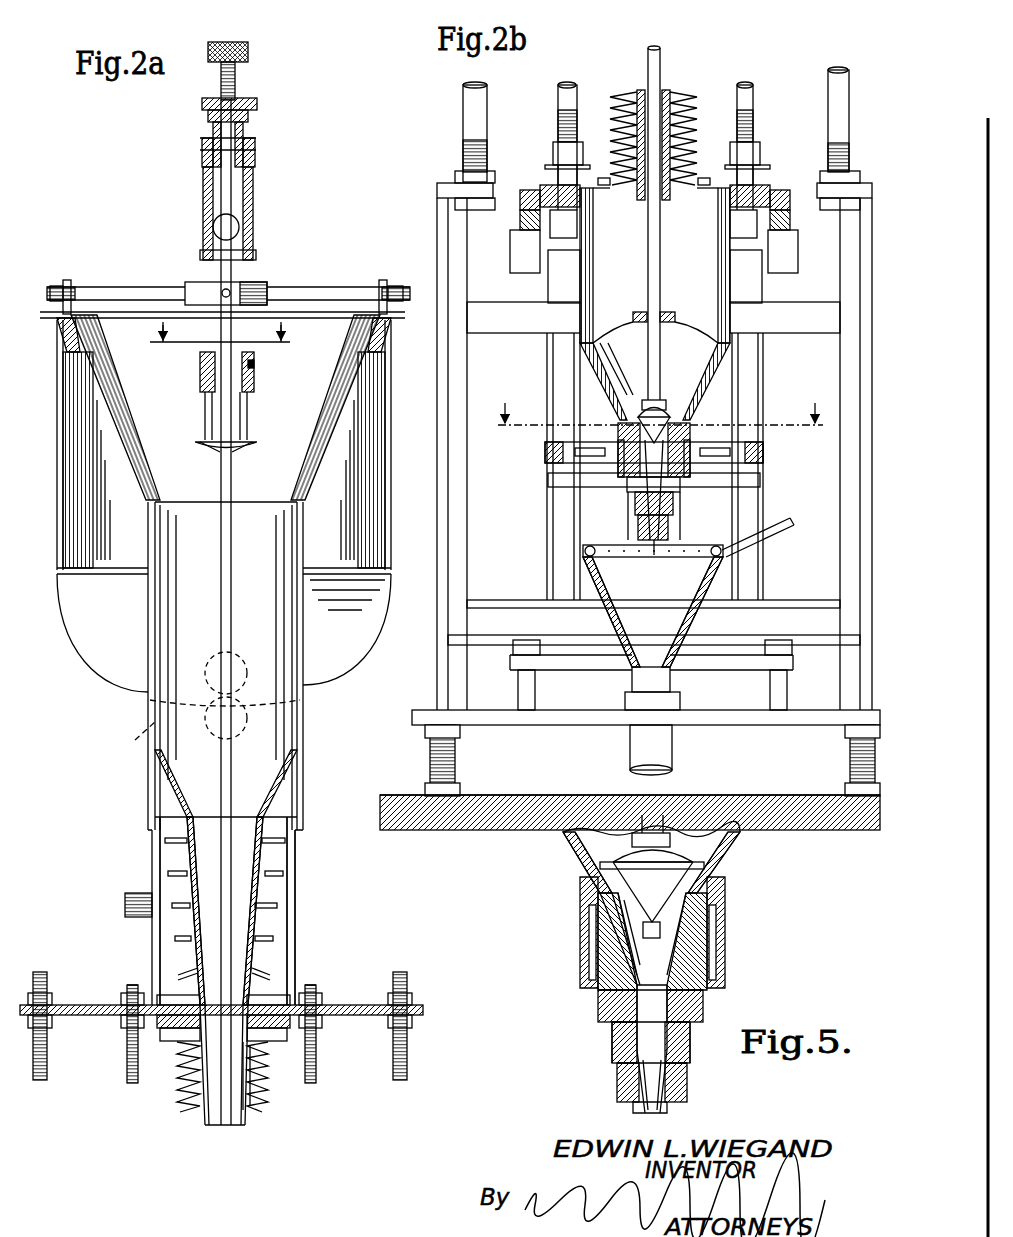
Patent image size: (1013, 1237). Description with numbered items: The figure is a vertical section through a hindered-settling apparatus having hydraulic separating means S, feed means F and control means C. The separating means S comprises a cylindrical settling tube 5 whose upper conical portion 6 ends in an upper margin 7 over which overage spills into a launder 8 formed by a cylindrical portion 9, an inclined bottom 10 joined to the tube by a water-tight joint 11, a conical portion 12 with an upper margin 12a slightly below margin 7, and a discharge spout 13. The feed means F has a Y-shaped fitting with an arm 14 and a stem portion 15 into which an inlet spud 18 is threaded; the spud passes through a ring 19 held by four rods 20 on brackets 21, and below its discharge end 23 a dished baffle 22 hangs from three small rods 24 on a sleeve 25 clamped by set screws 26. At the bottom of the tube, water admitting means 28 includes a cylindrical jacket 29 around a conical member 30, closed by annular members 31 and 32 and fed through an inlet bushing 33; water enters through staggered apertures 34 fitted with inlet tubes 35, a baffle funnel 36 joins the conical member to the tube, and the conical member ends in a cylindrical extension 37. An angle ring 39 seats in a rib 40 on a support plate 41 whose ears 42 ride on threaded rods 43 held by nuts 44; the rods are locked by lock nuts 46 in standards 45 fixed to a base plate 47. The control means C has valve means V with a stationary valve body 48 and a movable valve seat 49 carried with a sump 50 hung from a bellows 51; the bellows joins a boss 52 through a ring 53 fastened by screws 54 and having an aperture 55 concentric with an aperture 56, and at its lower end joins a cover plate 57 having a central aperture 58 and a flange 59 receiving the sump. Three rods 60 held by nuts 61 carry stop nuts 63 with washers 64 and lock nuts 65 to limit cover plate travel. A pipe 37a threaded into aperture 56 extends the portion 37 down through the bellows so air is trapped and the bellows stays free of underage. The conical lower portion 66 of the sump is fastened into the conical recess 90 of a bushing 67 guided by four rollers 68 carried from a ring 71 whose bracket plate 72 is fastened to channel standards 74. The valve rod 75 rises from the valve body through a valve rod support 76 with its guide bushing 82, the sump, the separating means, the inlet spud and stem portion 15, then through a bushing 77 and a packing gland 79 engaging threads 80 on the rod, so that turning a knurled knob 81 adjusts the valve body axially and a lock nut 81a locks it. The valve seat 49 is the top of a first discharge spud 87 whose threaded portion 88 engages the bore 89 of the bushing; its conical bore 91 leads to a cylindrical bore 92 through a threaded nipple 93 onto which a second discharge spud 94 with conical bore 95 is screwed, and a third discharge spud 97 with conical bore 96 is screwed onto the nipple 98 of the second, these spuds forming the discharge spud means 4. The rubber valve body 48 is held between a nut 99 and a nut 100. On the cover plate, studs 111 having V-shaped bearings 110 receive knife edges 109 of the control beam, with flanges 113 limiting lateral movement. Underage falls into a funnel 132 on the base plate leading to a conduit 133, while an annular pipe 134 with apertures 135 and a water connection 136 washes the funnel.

In FIG. 2B, the discharge spud means 4 is at (680, 549).
In FIG. 5, the discharge spud means 4 is at (576, 1031).
In FIG. 2A, the settling column or tube 5 is at (200, 692).
In FIG. 2A, the conical portion 6 is at (125, 445).
In FIG. 2A, the upper margin 7 is at (363, 312).
In FIG. 2A, the launder 8 is at (56, 414).
In FIG. 2A, the cylindrical portion 9 is at (58, 494).
In FIG. 2A, the inclined bottom 10 is at (85, 600).
In FIG. 2B, the inclined bottom 10 is at (651, 401).
In FIG. 2A, the water-tight joint 11 is at (303, 568).
In FIG. 2A, the conical portion 12 is at (60, 330).
In FIG. 2A, the upper margin 12a is at (204, 320).
In FIG. 2A, the discharge spout 13 is at (135, 745).
In FIG. 2A, the arm 14 is at (214, 230).
In FIG. 2A, the stem portion 15 is at (255, 205).
In FIG. 2A, the inlet spud or pipe 18 is at (214, 135).
In FIG. 2A, the ring 19 is at (200, 286).
In FIG. 2A, the rods 20 is at (95, 287).
In FIG. 2A, the brackets 21 is at (66, 282).
In FIG. 2A, the baffle 22 is at (248, 452).
In FIG. 2A, the discharge end 23 is at (250, 422).
In FIG. 2A, the small rods 24 is at (205, 430).
In FIG. 2A, the sleeve 25 is at (203, 382).
In FIG. 2A, the set screws 26 is at (252, 377).
In FIG. 2A, the means for admitting water 28 is at (298, 890).
In FIG. 2A, the cylindrical jacket 29 is at (298, 952).
In FIG. 2A, the conical member 30 is at (285, 872).
In FIG. 2A, the annular member 31 is at (290, 795).
In FIG. 2A, the annular member 32 is at (286, 1005).
In FIG. 2A, the threaded inlet bushing 33 is at (126, 898).
In FIG. 2A, the apertures 34 is at (192, 872).
In FIG. 2A, the inlet tubes 35 is at (170, 873).
In FIG. 2A, the baffle funnel 36 is at (160, 788).
In FIG. 2A, the cylindrical extension 37 is at (223, 992).
In FIG. 2A, the pipe 37a is at (204, 1110).
In FIG. 2B, the pipe 37a is at (640, 100).
In FIG. 2A, the angle ring 39 is at (315, 1008).
In FIG. 2A, the annular rib 40 is at (333, 1018).
In FIG. 2A, the support plate 41 is at (350, 1018).
In FIG. 2A, the ears 42 is at (68, 1005).
In FIG. 2A, the threaded rods 43 is at (40, 1076).
In FIG. 2B, the threaded rods 43 is at (465, 102).
In FIG. 2A, the nuts 44 is at (418, 1010).
In FIG. 2B, the standards 45 is at (440, 196).
In FIG. 2B, the lock nuts 46 is at (457, 175).
In FIG. 2B, the base plate 47 is at (548, 726).
In FIG. 2B, the valve body 48 is at (668, 400).
In FIG. 5, the valve body 48 is at (694, 866).
In FIG. 5, the valve seat 49 is at (700, 892).
In FIG. 2B, the sump 50 is at (578, 318).
In FIG. 5, the sump 50 is at (564, 838).
In FIG. 2A, the bellows 51 is at (258, 1072).
In FIG. 2B, the bellows 51 is at (690, 110).
In FIG. 2A, the boss 52 is at (165, 1028).
In FIG. 2A, the ring 53 is at (268, 1031).
In FIG. 2B, the ring 53 is at (600, 172).
In FIG. 2A, the screws 54 is at (168, 1041).
In FIG. 2A, the aperture 55 is at (190, 1062).
In FIG. 2A, the aperture 56 is at (258, 1052).
In FIG. 2B, the cover plate 57 is at (725, 185).
In FIG. 2B, the central aperture 58 is at (620, 202).
In FIG. 2B, the flange 59 is at (718, 202).
In FIG. 2A, the rods 60 is at (130, 1077).
In FIG. 2B, the rods 60 is at (563, 95).
In FIG. 2A, the nuts 61 is at (100, 1005).
In FIG. 2B, the stop nuts 63 is at (556, 137).
In FIG. 2B, the washer 64 is at (548, 167).
In FIG. 2B, the lock nuts 65 is at (557, 140).
In FIG. 2B, the lower portion 66 is at (592, 380).
In FIG. 5, the lower portion 66 is at (580, 864).
In FIG. 2B, the bushing 67 is at (686, 430).
In FIG. 5, the bushing 67 is at (578, 932).
In FIG. 2B, the rollers 68 is at (630, 448).
In FIG. 2B, the ring 71 is at (765, 455).
In FIG. 2B, the bracket plate 72 is at (762, 487).
In FIG. 2B, the channel shaped standards 74 is at (765, 350).
In FIG. 2B, the valve rod 75 is at (661, 270).
In FIG. 5, the valve rod 75 is at (666, 825).
In FIG. 2B, the valve rod support 76 is at (673, 324).
In FIG. 2A, the bushing 77 is at (256, 148).
In FIG. 2A, the packing gland 79 is at (258, 105).
In FIG. 2A, the threads 80 is at (221, 90).
In FIG. 2A, the knurled knob 81 is at (212, 48).
In FIG. 2A, the lock nut 81a is at (246, 104).
In FIG. 2B, the guide bushing 82 is at (636, 313).
In FIG. 5, the first discharge spud 87 is at (705, 1006).
In FIG. 5, the exteriorly threaded portion 88 is at (705, 957).
In FIG. 5, the bore 89 is at (728, 942).
In FIG. 5, the conical recess 90 is at (615, 882).
In FIG. 5, the conical bore 91 is at (625, 948).
In FIG. 5, the cylindrical bore 92 is at (640, 1002).
In FIG. 5, the threaded nipple 93 is at (613, 1037).
In FIG. 5, the second discharge spud 94 is at (612, 1056).
In FIG. 5, the conical bore 95 is at (633, 1076).
In FIG. 5, the conical bore 96 is at (668, 1107).
In FIG. 5, the third discharge spud 97 is at (690, 1086).
In FIG. 5, the threaded nipple 98 is at (690, 1069).
In FIG. 5, the nut 99 is at (670, 847).
In FIG. 5, the nut 100 is at (662, 928).
In FIG. 2B, the knife edges 109 is at (515, 228).
In FIG. 2B, the knife edge bearings 110 is at (520, 207).
In FIG. 2B, the studs 111 is at (518, 196).
In FIG. 2B, the washers or flanges 113 is at (542, 222).
In FIG. 2B, the funnel 132 is at (590, 592).
In FIG. 2B, the pipe or conduit 133 is at (630, 762).
In FIG. 2B, the annular pipe 134 is at (614, 549).
In FIG. 2B, the apertures 135 is at (662, 557).
In FIG. 2B, the connection 136 is at (766, 536).
In FIG. 2B, the control means C is at (736, 282).
In FIG. 2A, the feed means F is at (258, 222).
In FIG. 2A, the hydraulic separating means S is at (310, 702).
In FIG. 2B, the valve means V is at (630, 400).
In FIG. 5, the valve means V is at (653, 849).